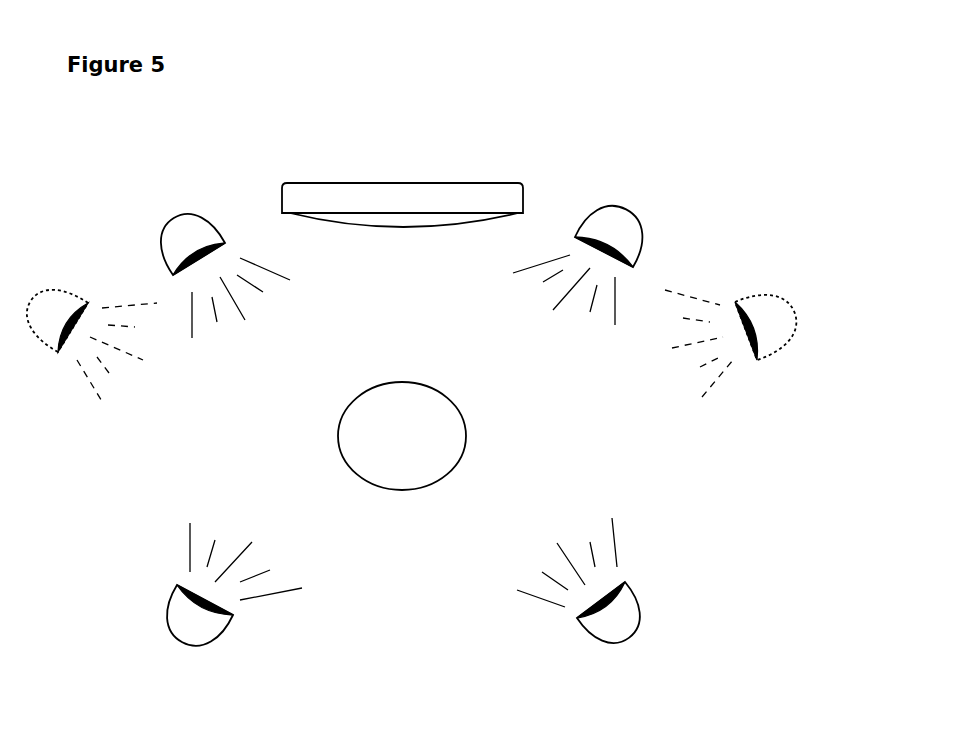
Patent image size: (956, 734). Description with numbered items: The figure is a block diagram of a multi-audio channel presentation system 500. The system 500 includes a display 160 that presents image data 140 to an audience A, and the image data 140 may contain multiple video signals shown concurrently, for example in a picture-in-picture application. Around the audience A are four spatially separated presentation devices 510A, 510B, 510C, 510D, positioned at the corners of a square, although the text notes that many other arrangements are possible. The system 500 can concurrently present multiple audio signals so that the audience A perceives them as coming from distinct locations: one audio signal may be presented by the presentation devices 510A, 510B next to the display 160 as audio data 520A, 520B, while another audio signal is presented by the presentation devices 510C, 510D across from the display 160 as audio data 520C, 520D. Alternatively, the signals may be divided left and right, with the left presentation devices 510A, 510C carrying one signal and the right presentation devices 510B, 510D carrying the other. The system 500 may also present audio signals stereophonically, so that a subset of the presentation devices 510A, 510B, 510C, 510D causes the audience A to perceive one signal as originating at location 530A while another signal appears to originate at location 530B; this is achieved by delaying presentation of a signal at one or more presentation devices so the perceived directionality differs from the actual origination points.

The system 500 is at (754, 116).
The image data 140 is at (442, 180).
The display 160 is at (395, 182).
The presentation device 510A is at (185, 185).
The presentation device 510B is at (615, 207).
The presentation device 510C is at (198, 647).
The presentation device 510D is at (643, 642).
The audio data 520A is at (155, 236).
The audio data 520B is at (650, 228).
The audio data 520C is at (161, 618).
The audio data 520D is at (649, 618).
The location 530A is at (50, 347).
The location 530B is at (802, 317).